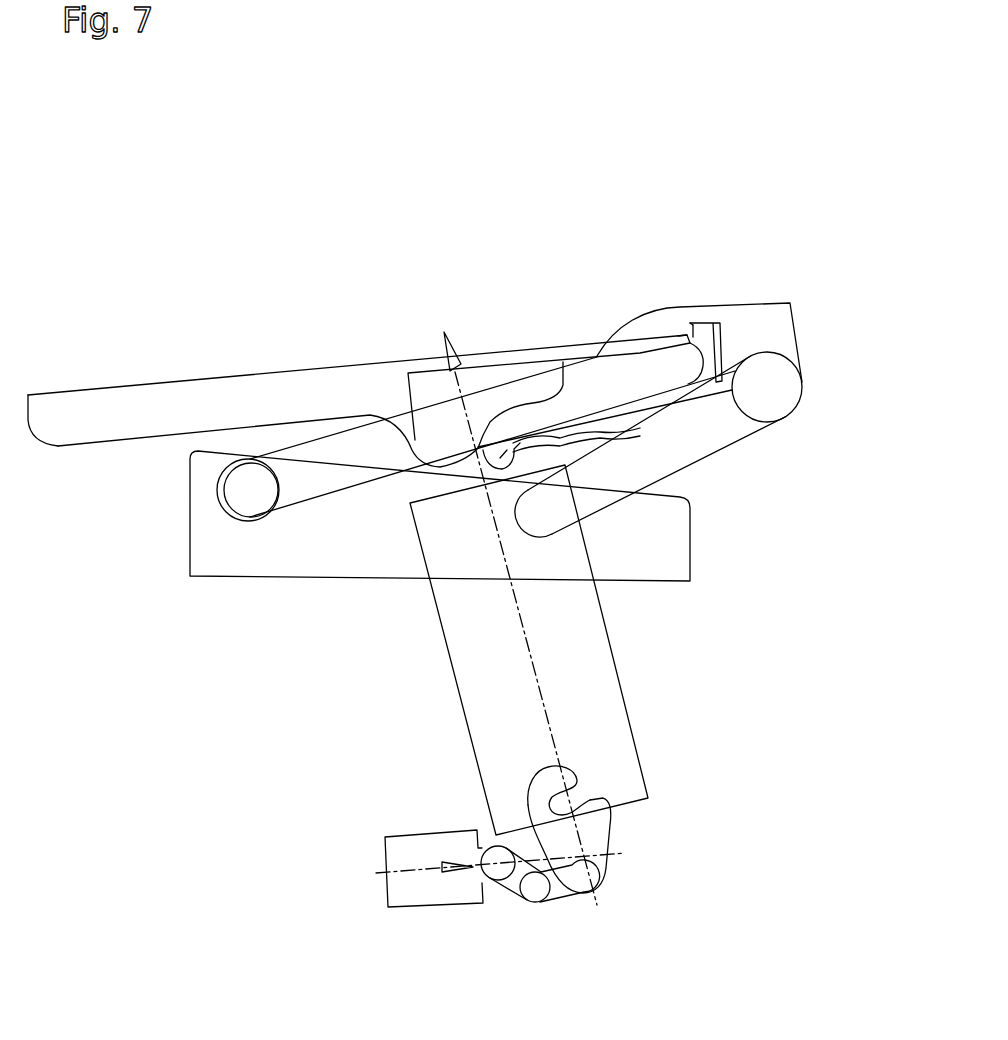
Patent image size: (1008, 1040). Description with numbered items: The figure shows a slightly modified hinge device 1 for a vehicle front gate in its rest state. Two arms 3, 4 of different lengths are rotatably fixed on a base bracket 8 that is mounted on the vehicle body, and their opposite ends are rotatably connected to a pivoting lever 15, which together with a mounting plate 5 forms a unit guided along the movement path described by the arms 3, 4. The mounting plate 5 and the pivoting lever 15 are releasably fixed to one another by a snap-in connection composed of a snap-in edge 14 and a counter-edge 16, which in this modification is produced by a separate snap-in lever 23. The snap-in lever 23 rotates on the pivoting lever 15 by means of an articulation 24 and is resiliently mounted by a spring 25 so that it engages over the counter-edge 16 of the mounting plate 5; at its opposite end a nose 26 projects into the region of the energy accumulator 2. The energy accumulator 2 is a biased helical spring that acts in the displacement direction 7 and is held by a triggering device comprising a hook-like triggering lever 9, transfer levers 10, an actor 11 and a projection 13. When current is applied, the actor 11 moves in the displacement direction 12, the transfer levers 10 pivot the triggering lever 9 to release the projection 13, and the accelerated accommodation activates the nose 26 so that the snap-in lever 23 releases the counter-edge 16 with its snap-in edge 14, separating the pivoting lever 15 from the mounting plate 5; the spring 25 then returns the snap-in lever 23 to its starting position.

The hinge device 1 is at (218, 347).
The energy accumulator 2 is at (586, 716).
The arm 3 is at (660, 455).
The arm 4 is at (317, 480).
The mounting plate 5 is at (281, 390).
The displacement direction 7 is at (525, 655).
The base bracket 8 is at (647, 543).
The triggering lever 9 is at (598, 838).
The transfer levers 10 is at (558, 877).
The actor 11 is at (420, 888).
The displacement direction 12 is at (376, 873).
The projection 13 is at (571, 799).
The snap-in edge 14 is at (690, 323).
The pivoting lever 15 is at (696, 325).
The counter-edge 16 is at (677, 335).
The snap-in lever 23 is at (717, 320).
The articulation 24 is at (760, 422).
The spring 25 is at (718, 357).
The nose 26 is at (478, 470).